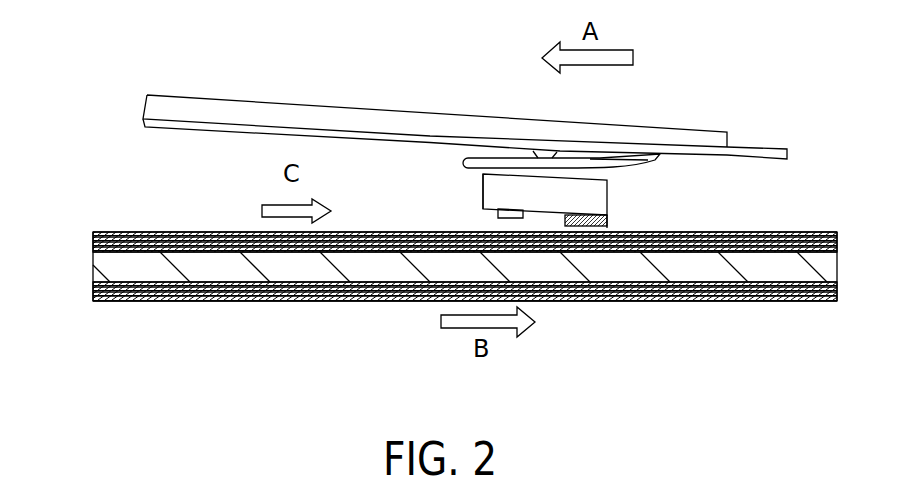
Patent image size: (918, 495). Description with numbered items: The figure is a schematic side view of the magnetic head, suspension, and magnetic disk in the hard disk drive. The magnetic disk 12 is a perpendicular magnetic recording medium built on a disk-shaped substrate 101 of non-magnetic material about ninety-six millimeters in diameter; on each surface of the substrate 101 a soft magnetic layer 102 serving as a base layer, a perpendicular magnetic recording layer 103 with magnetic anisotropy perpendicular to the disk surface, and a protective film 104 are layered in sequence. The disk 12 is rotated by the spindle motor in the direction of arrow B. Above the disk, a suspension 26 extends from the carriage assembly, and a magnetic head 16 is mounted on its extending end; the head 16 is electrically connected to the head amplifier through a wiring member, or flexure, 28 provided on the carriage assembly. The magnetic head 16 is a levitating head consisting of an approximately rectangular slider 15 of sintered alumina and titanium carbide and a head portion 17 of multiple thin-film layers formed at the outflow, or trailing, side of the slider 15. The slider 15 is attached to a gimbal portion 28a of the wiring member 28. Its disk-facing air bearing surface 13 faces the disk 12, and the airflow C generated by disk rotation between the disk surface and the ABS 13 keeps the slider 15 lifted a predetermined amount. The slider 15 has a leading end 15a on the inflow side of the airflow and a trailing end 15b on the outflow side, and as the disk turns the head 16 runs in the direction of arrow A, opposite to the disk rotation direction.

The magnetic disk 12 is at (132, 208).
The substrate 101 is at (212, 272).
The soft magnetic layer 102 is at (93, 250).
The perpendicular magnetic recording layer 103 is at (165, 232).
The protective film 104 is at (96, 232).
The suspension 26 is at (290, 104).
The wiring member (flexure) 28 is at (231, 133).
The gimbal portion 28a is at (514, 157).
The slider 15 is at (583, 185).
The leading end 15a is at (466, 160).
The trailing end 15b is at (607, 194).
The magnetic head 16 is at (466, 190).
The air bearing surface (ABS) 13 is at (553, 237).
The head portion 17 is at (600, 238).